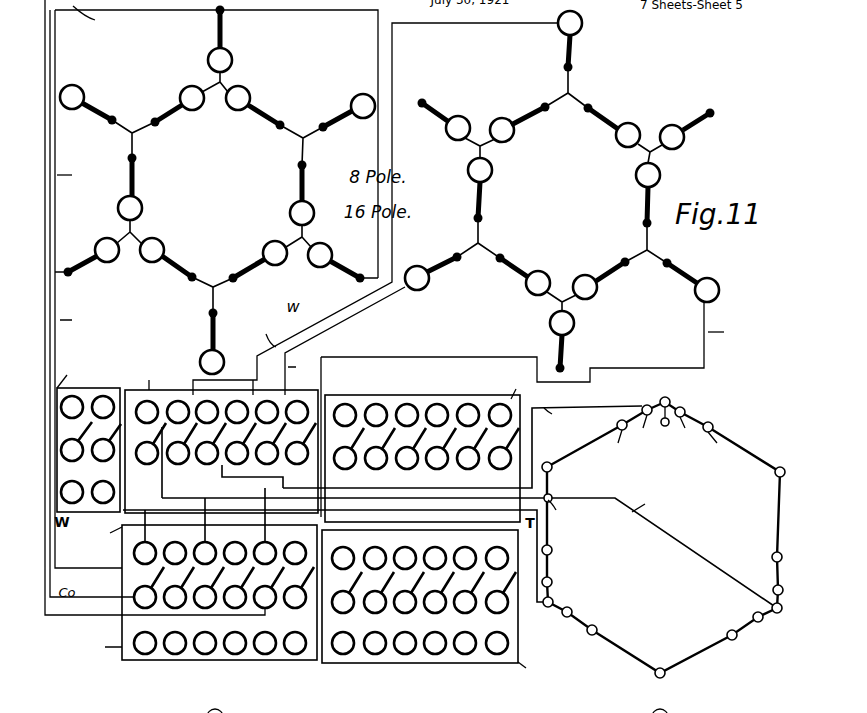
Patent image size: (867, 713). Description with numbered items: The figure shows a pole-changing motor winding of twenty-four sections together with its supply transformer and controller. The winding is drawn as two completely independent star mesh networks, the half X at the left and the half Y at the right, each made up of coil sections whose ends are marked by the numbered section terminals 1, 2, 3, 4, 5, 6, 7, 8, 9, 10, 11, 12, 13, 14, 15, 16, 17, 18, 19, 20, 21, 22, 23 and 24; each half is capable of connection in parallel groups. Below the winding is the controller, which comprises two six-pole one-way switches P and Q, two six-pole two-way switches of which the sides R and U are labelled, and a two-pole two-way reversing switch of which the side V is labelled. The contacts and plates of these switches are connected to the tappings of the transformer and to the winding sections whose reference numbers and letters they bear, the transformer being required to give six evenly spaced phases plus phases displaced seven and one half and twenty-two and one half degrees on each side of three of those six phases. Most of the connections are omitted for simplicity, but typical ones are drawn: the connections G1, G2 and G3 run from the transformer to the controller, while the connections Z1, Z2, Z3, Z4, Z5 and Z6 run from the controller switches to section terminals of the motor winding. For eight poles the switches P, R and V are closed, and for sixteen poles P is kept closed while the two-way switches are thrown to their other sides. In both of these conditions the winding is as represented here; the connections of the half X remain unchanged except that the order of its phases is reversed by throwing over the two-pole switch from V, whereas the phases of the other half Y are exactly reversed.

The winding section terminal 1 is at (320, 255).
The winding section terminal 2 is at (562, 323).
The winding section terminal 3 is at (275, 253).
The winding section terminal 4 is at (538, 283).
The winding section terminal 5 is at (212, 362).
The winding section terminal 6 is at (417, 278).
The winding section terminal 7 is at (152, 250).
The winding section terminal 8 is at (480, 170).
The winding section terminal 9 is at (107, 250).
The winding section terminal 10 is at (458, 128).
The winding section terminal 11 is at (130, 208).
The winding section terminal 12 is at (502, 130).
The winding section terminal 13 is at (72, 97).
The winding section terminal 14 is at (570, 23).
The winding section terminal 15 is at (192, 98).
The winding section terminal 16 is at (628, 135).
The winding section terminal 17 is at (220, 60).
The winding section terminal 18 is at (672, 137).
The winding section terminal 19 is at (238, 98).
The winding section terminal 20 is at (648, 175).
The winding section terminal 21 is at (363, 106).
The winding section terminal 22 is at (707, 290).
The winding section terminal 23 is at (302, 213).
The winding section terminal 24 is at (585, 287).
The first half of the winding X is at (211, 307).
The second half of the winding Y is at (566, 204).
The connection from controller to winding section terminal Z1 is at (494, 402).
The connection from controller to winding section terminal Z2 is at (375, 209).
The connection from controller to winding section terminal Z3 is at (729, 333).
The connection from controller to winding section terminal Z4 is at (74, 302).
The connection from controller to winding section terminal Z5 is at (78, 180).
The connection from controller to winding section terminal Z6 is at (95, 20).
The two-pole two-way reversing switch position V is at (89, 435).
The six-pole one-way switch P is at (221, 439).
The six-pole one-way switch Q is at (425, 447).
The six-pole two-way switch position R is at (203, 592).
The six-pole two-way switch position U is at (430, 605).
The connection from transformer to controller G1 is at (663, 538).
The connection from transformer to controller G2 is at (646, 500).
The connection from transformer to controller G3 is at (564, 512).